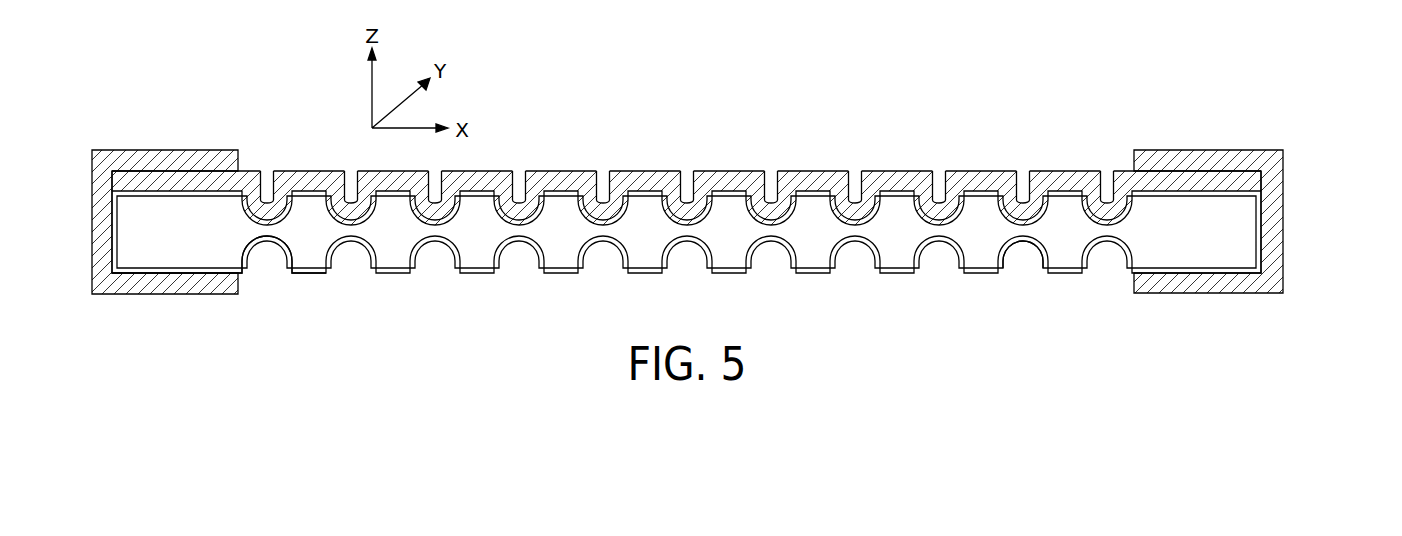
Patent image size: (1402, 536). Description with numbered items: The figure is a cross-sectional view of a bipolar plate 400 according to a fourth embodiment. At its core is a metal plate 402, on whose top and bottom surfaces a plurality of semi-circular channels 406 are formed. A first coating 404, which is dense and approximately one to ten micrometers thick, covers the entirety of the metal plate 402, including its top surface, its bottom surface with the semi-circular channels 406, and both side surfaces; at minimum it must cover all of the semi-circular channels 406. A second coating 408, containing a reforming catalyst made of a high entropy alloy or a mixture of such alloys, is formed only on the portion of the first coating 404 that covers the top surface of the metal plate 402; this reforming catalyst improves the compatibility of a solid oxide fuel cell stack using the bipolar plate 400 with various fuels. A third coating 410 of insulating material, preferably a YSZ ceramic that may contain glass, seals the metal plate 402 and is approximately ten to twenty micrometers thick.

The bipolar plate 400 is at (1307, 228).
The metal plate 402 is at (1228, 247).
The first coating 404 is at (136, 294).
The semi-circular channels 406 is at (1022, 261).
The second coating 408 is at (977, 171).
The third coating 410 is at (103, 231).